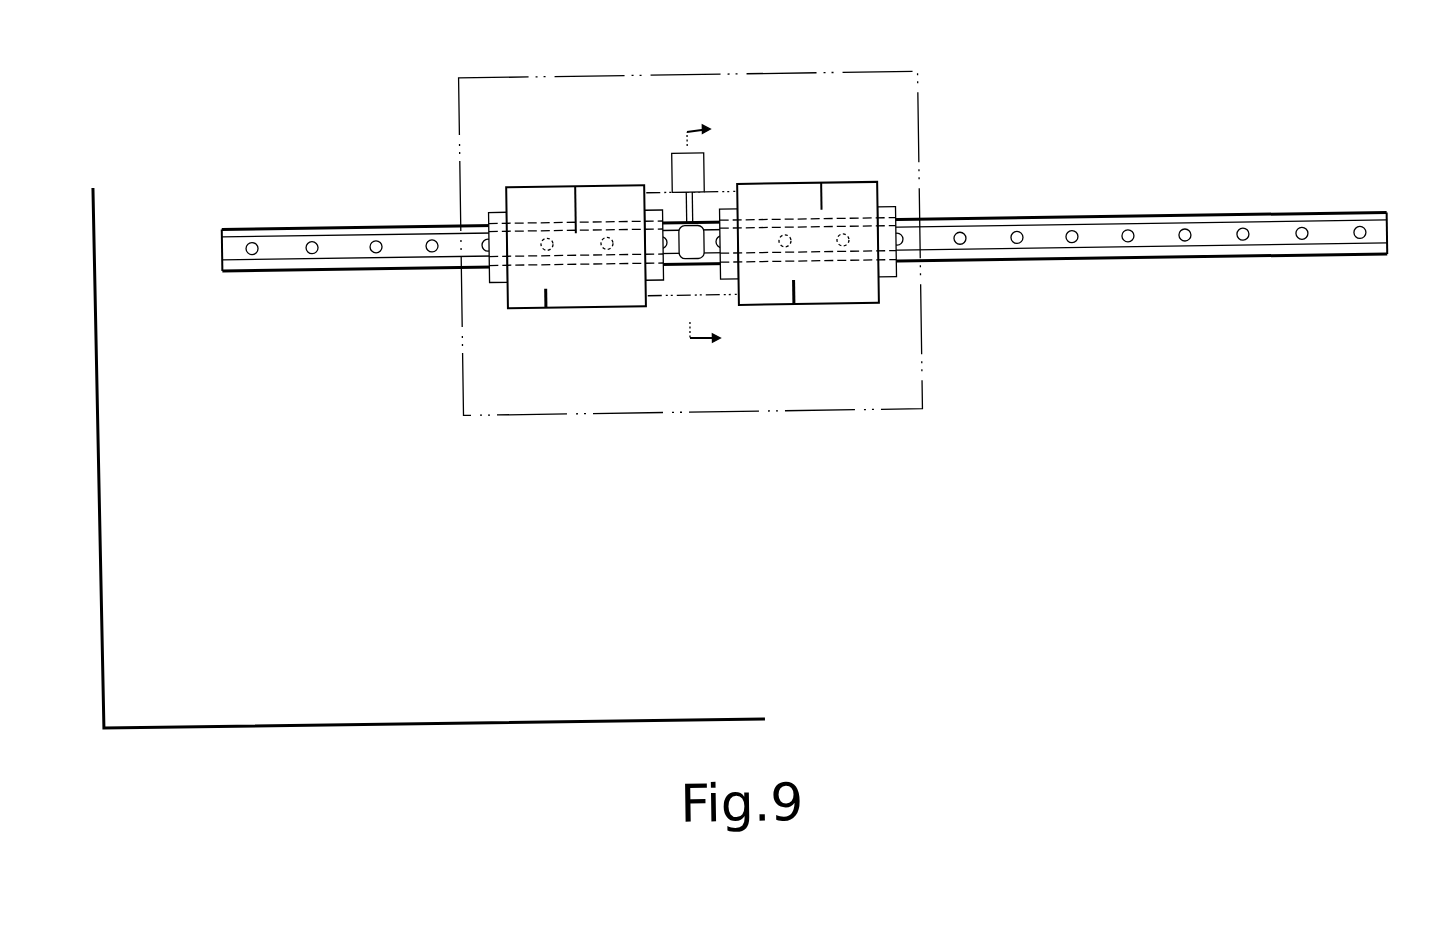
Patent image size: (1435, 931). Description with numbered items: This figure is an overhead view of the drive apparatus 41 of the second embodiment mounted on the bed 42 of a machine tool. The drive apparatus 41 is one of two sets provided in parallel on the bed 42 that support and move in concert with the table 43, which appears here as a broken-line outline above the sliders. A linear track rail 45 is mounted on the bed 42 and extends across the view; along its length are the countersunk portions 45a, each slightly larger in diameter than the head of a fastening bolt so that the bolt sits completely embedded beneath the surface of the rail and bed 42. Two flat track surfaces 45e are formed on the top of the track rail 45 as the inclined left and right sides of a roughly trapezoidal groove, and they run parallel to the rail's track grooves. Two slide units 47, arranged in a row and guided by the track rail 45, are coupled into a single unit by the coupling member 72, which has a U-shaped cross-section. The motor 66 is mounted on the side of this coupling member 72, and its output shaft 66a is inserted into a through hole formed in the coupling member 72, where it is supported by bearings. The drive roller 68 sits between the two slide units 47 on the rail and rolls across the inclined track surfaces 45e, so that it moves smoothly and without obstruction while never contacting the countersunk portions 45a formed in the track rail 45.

The drive apparatus 41 is at (1304, 155).
The bed 42 is at (511, 693).
The table 43 is at (877, 76).
The track rail 45 is at (805, 248).
The countersunk portion 45a is at (308, 239).
The track surface 45e is at (354, 231).
The slide unit 47 is at (552, 306).
The motor 66 is at (703, 152).
The output shaft 66a is at (693, 211).
The drive roller 68 is at (700, 256).
The coupling member 72 is at (684, 287).